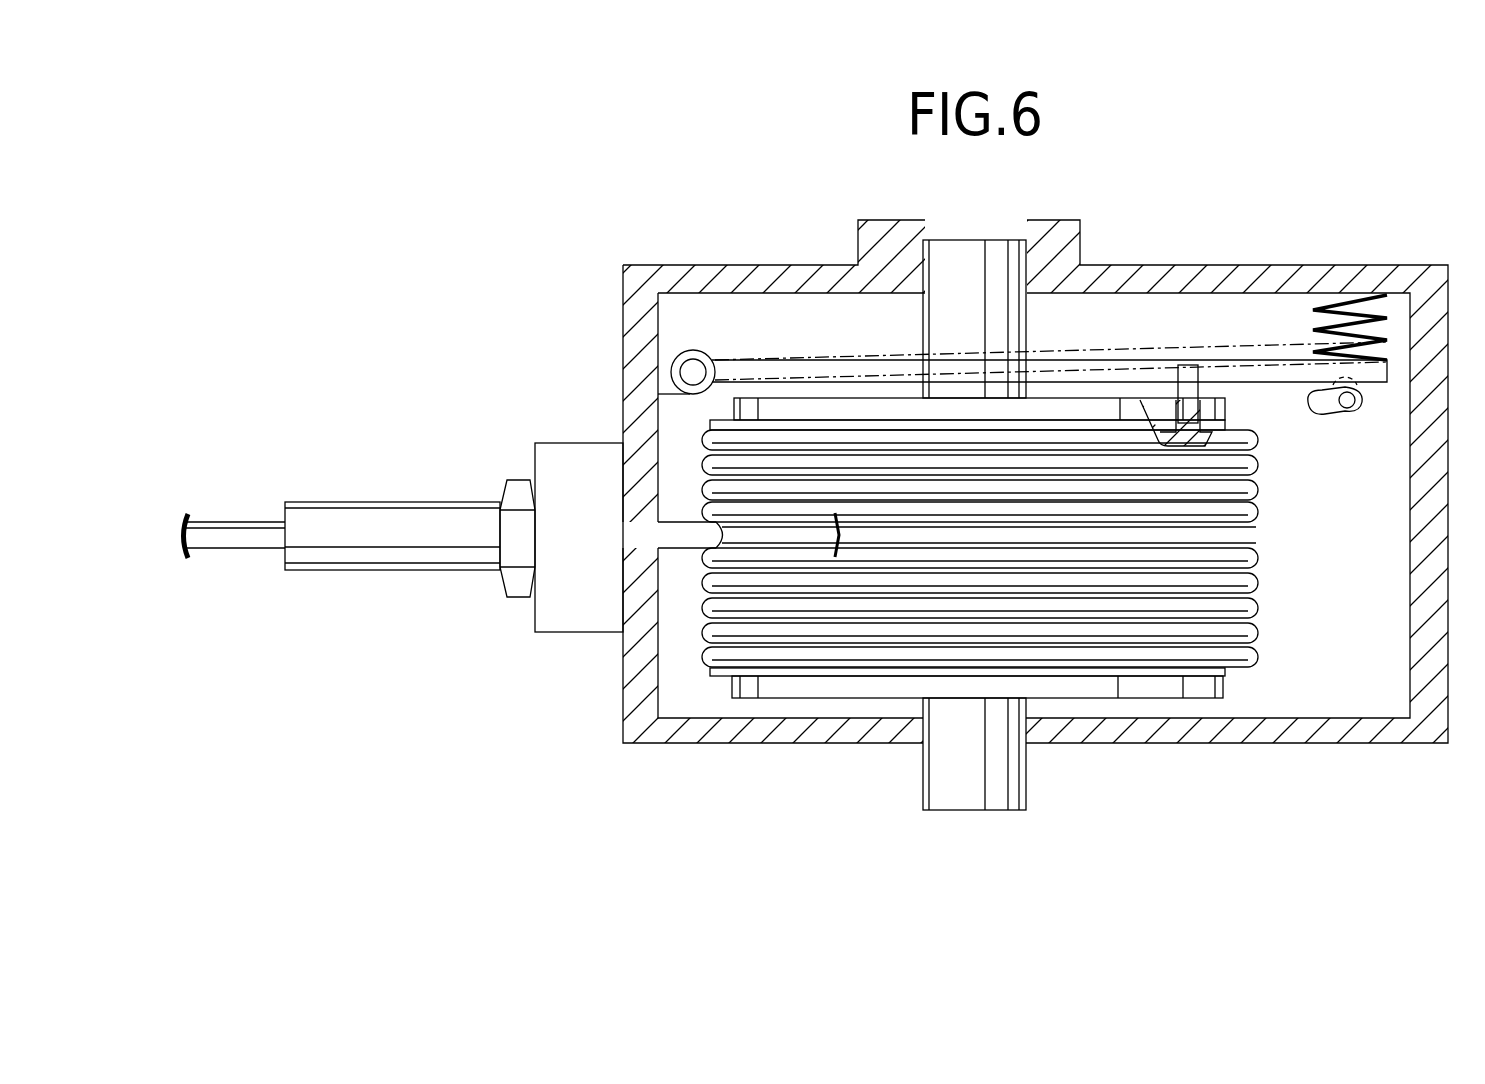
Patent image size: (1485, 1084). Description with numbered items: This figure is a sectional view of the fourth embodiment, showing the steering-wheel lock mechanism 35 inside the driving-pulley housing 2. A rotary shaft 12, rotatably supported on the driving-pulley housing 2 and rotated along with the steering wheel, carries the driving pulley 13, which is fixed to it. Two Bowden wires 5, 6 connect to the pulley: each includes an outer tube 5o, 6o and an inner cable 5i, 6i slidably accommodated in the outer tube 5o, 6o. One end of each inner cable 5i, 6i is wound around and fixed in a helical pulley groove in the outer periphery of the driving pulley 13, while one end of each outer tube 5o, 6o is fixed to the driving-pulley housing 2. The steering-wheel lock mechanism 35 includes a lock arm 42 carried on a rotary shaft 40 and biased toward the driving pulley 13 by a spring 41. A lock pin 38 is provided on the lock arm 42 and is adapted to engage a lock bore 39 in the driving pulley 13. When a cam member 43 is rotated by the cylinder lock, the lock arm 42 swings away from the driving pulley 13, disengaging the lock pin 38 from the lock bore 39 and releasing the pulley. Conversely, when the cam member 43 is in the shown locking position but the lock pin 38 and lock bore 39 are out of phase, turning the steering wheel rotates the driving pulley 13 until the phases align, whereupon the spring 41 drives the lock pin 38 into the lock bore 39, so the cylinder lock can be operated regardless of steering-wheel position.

The driving-pulley housing 2 is at (768, 287).
The rotary shaft 12 is at (993, 788).
The driving pulley 13 is at (813, 688).
The Bowden wire 5 is at (719, 620).
The Bowden wire 6 is at (719, 620).
The outer tube 5o is at (359, 591).
The outer tube 6o is at (225, 537).
The inner cable 5i is at (828, 608).
The inner cable 6i is at (698, 535).
The steering-wheel lock mechanism 35 is at (1236, 324).
The lock pin 38 is at (1178, 390).
The lock bore 39 is at (1198, 420).
The rotary shaft 40 is at (700, 364).
The spring 41 is at (1383, 305).
The lock arm 42 is at (847, 362).
The cam member 43 is at (1318, 398).